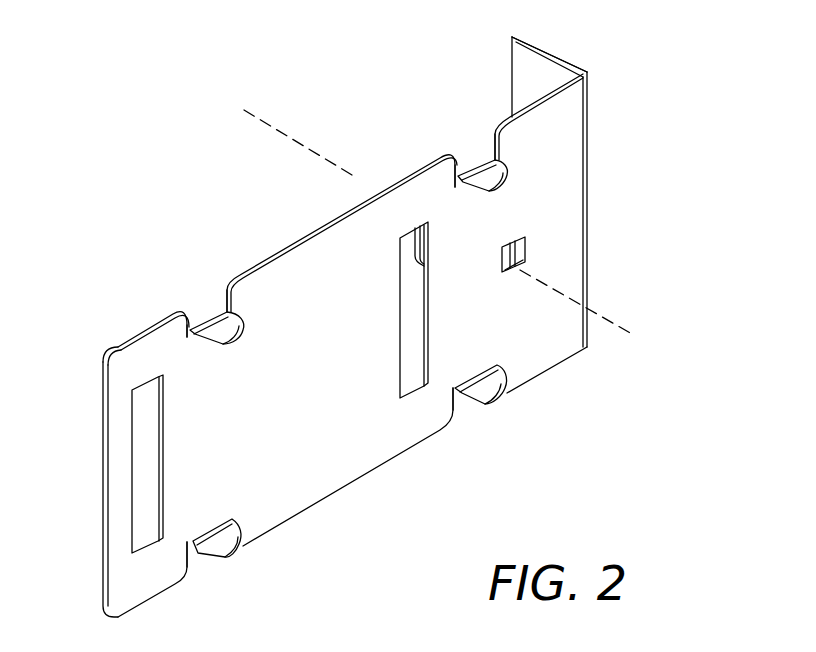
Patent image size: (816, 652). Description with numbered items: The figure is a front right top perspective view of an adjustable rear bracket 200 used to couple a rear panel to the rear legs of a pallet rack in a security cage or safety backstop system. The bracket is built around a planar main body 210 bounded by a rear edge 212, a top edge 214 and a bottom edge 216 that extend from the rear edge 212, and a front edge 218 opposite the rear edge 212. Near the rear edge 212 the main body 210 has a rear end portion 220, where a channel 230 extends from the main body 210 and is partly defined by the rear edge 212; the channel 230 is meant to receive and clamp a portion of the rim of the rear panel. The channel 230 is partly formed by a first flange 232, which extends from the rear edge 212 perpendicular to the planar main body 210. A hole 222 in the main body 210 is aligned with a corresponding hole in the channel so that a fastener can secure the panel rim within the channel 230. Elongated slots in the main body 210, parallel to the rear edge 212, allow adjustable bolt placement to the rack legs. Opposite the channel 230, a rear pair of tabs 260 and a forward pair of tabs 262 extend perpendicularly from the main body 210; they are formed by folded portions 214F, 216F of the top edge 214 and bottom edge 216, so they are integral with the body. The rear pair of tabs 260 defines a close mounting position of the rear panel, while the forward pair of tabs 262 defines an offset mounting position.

The adjustable rear bracket 200 is at (667, 83).
The planar main body 210 is at (395, 432).
The rear edge 212 is at (587, 183).
The top edge 214 is at (290, 243).
The folded portion of top edge 214F is at (197, 315).
The bottom edge 216 is at (360, 480).
The folded portion of bottom edge 216F is at (198, 560).
The front edge 218 is at (103, 566).
The rear end portion 220 is at (547, 147).
The hole 222 is at (528, 250).
The channel 230 is at (534, 80).
The first flange 232 is at (527, 38).
The rear pair of tabs 260 is at (487, 170).
The forward pair of tabs 262 is at (207, 307).